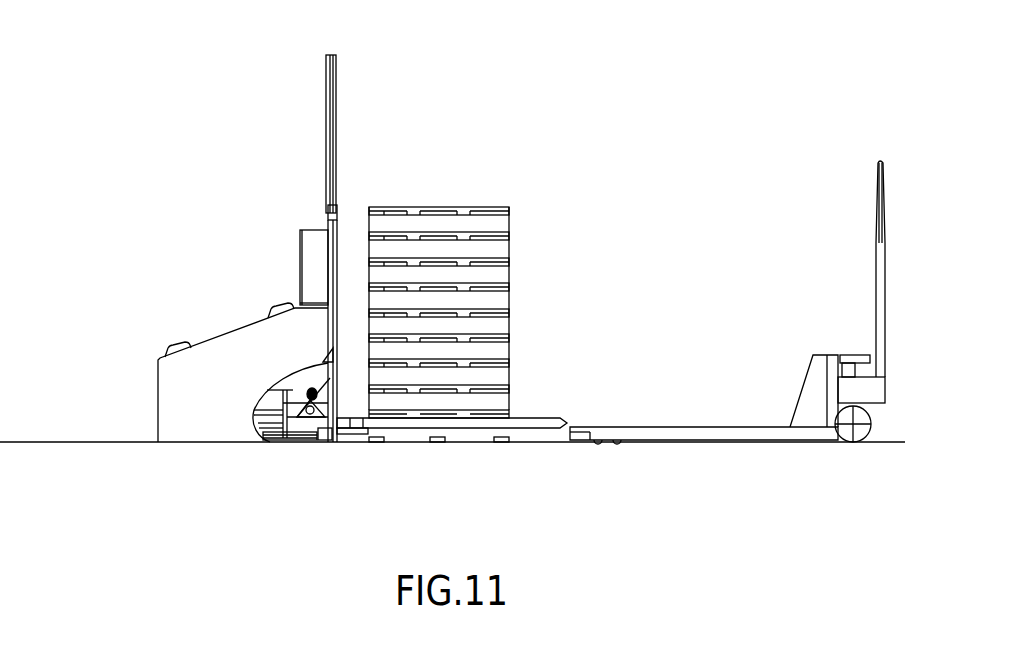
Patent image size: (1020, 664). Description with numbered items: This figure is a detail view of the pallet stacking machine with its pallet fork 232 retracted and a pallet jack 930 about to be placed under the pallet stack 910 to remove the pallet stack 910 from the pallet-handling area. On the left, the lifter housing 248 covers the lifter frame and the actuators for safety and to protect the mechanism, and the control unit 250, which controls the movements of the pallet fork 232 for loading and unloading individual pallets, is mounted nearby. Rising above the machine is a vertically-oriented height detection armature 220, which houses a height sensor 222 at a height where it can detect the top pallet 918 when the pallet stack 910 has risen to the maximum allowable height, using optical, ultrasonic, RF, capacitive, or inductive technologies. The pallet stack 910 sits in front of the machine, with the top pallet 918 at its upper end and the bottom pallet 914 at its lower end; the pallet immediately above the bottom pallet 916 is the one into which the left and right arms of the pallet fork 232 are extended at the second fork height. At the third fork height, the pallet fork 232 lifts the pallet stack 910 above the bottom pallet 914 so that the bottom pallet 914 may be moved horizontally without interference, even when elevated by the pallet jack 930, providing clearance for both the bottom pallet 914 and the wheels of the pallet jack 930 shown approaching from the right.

The lifter housing 248 is at (182, 380).
The control unit 250 is at (318, 255).
The height sensor 222 is at (337, 55).
The height detection armature 220 is at (337, 95).
The pallet fork 232 is at (310, 423).
The pallet immediately above the bottom pallet 916 is at (375, 412).
The bottom pallet 914 is at (408, 430).
The top pallet 918 is at (445, 217).
The pallet stack 910 is at (538, 213).
The pallet jack 930 is at (813, 355).